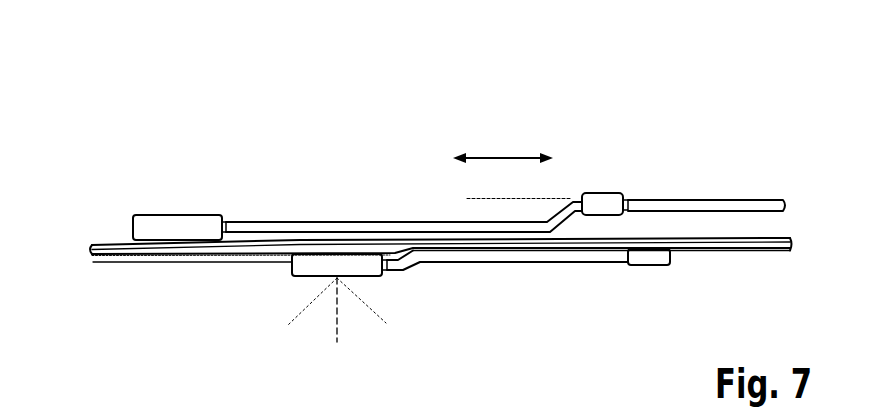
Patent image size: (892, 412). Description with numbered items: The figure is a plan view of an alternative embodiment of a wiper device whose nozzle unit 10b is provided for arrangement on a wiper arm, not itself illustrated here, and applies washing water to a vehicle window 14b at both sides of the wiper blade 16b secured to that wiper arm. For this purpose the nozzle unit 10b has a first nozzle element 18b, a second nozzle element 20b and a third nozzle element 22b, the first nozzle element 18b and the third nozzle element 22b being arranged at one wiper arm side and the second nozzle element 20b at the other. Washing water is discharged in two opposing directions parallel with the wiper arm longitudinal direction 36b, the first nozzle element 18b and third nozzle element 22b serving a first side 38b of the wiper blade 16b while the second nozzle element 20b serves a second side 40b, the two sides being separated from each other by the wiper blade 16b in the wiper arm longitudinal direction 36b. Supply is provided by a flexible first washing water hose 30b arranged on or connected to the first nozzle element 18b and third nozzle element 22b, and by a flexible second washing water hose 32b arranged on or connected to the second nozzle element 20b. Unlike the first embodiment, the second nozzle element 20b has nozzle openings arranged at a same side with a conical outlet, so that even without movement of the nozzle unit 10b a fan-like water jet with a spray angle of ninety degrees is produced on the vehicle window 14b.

The nozzle unit 10b is at (210, 152).
The vehicle window 14b is at (327, 132).
The wiper blade 16b is at (130, 262).
The first nozzle element 18b is at (147, 216).
The second nozzle element 20b is at (297, 273).
The third nozzle element 22b is at (608, 200).
The first washing water hose 30b is at (748, 200).
The second washing water hose 32b is at (747, 244).
The wiper arm longitudinal direction 36b is at (500, 156).
The first side 38b is at (378, 162).
The second side 40b is at (432, 318).